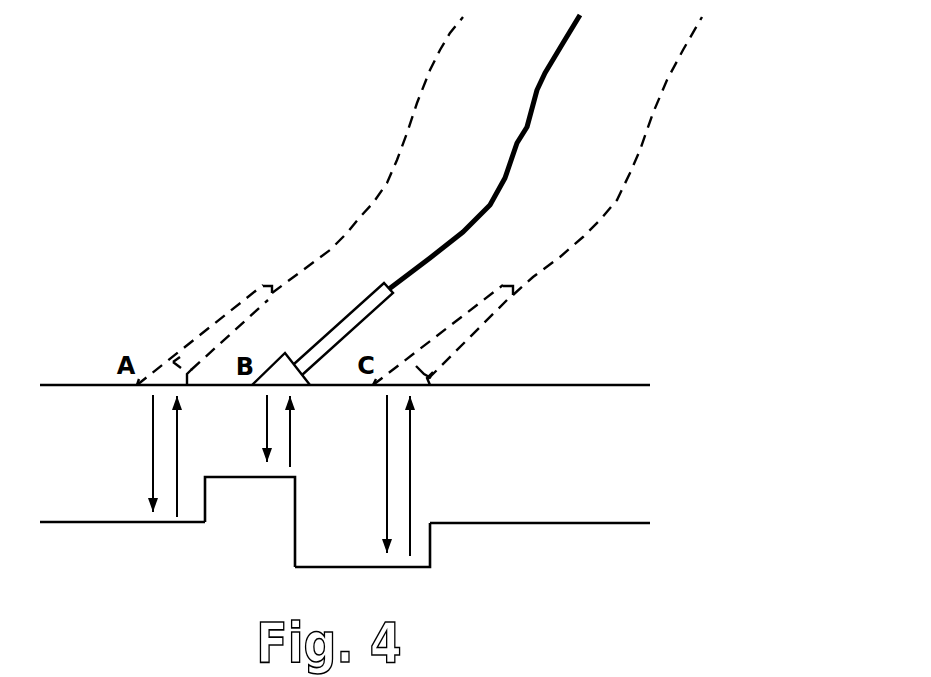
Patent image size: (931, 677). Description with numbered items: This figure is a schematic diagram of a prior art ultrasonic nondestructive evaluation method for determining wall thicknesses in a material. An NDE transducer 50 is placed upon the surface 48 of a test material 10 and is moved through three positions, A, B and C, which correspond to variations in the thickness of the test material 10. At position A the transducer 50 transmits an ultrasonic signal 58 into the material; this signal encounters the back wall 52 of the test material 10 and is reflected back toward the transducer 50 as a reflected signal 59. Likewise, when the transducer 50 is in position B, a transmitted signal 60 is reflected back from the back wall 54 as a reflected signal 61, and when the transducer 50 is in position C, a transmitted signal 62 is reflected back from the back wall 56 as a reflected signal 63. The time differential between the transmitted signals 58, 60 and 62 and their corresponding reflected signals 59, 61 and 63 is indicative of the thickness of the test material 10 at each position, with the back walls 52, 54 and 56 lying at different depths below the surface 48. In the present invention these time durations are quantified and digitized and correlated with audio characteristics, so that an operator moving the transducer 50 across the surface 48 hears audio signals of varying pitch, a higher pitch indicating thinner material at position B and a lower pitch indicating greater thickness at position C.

The test material 10 is at (564, 470).
The surface 48 is at (593, 385).
The NDE transducer 50 is at (363, 297).
The back wall 52 is at (108, 522).
The back wall 54 is at (260, 477).
The back wall 56 is at (398, 567).
The ultrasonic signal 58 is at (152, 428).
The reflected signal 59 is at (178, 452).
The transmitted signal 60 is at (266, 420).
The reflected signal 61 is at (292, 445).
The transmitted signal 62 is at (387, 421).
The reflected signal 63 is at (411, 477).